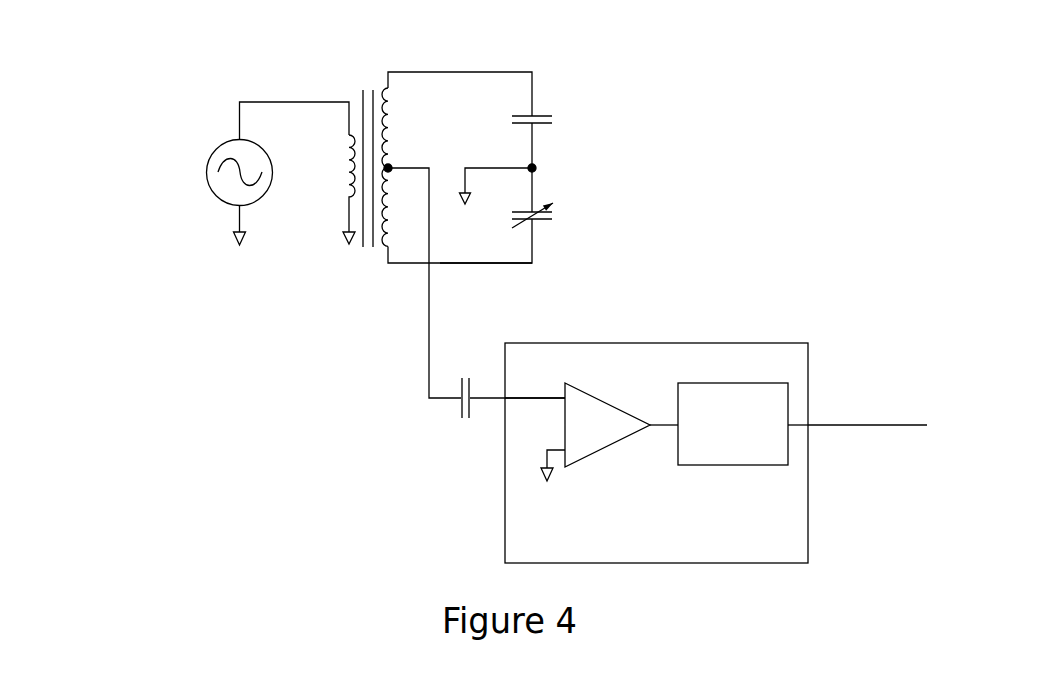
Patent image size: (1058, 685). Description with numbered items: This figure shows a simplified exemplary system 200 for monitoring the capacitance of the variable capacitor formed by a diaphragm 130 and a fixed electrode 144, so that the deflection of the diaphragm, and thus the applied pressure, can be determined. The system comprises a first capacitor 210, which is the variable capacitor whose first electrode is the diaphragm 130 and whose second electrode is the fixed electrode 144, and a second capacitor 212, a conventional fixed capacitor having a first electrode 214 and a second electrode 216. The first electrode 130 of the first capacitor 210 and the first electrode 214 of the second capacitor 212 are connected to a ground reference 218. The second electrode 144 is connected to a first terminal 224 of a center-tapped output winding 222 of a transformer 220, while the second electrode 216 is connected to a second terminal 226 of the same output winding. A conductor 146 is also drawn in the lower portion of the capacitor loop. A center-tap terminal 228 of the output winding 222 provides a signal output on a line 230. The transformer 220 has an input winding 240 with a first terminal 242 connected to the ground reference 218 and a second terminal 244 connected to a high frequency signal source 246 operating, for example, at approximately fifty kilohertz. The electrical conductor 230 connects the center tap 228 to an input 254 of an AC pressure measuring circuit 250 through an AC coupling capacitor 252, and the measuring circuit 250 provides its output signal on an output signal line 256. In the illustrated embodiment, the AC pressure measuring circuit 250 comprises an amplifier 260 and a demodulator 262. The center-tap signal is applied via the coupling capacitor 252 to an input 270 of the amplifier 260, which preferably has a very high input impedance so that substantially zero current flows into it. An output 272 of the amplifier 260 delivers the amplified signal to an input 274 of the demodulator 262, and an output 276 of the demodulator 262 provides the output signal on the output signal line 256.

The system 200 is at (195, 247).
The diaphragm 130 is at (523, 212).
The fixed electrode 144 is at (543, 221).
The conductor 146 is at (484, 265).
The first capacitor 210 is at (558, 203).
The second capacitor 212 is at (558, 113).
The first electrode 214 is at (540, 125).
The second electrode 216 is at (523, 115).
The ground reference 218 is at (349, 230).
The transformer 220 is at (370, 84).
The output winding 222 is at (394, 134).
The first terminal 224 is at (388, 262).
The second terminal 226 is at (388, 90).
The center-tap terminal 228 is at (388, 167).
The line 230 is at (428, 296).
The input winding 240 is at (336, 140).
The first terminal 242 is at (352, 194).
The second terminal 244 is at (349, 136).
The high frequency signal source 246 is at (263, 196).
The AC pressure measuring circuit 250 is at (697, 343).
The AC coupling capacitor 252 is at (462, 382).
The input 254 is at (502, 399).
The output signal line 256 is at (890, 427).
The amplifier 260 is at (612, 406).
The demodulator 262 is at (707, 383).
The input 270 is at (565, 398).
The output 272 is at (653, 428).
The input 274 is at (677, 423).
The output 276 is at (790, 422).